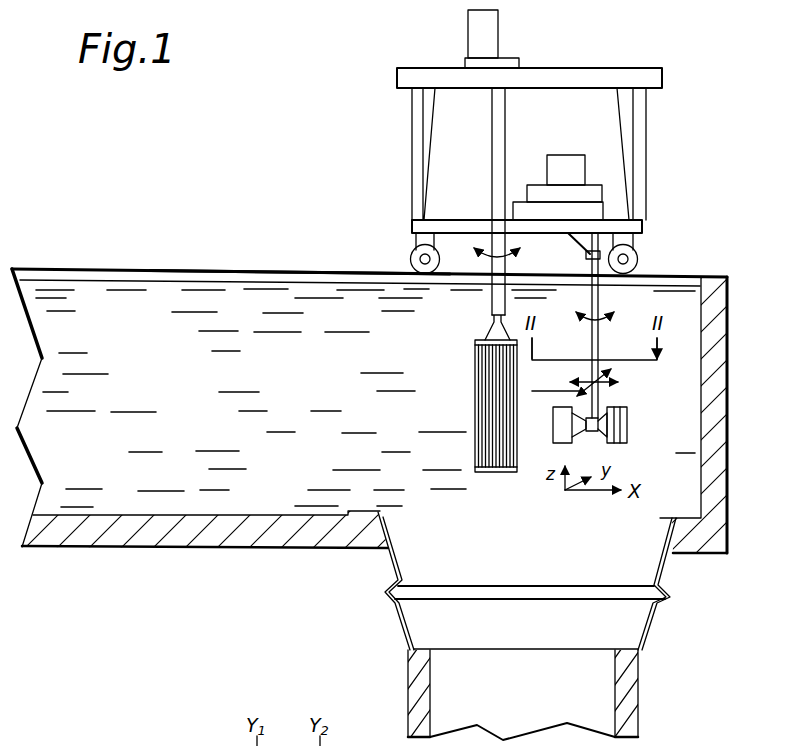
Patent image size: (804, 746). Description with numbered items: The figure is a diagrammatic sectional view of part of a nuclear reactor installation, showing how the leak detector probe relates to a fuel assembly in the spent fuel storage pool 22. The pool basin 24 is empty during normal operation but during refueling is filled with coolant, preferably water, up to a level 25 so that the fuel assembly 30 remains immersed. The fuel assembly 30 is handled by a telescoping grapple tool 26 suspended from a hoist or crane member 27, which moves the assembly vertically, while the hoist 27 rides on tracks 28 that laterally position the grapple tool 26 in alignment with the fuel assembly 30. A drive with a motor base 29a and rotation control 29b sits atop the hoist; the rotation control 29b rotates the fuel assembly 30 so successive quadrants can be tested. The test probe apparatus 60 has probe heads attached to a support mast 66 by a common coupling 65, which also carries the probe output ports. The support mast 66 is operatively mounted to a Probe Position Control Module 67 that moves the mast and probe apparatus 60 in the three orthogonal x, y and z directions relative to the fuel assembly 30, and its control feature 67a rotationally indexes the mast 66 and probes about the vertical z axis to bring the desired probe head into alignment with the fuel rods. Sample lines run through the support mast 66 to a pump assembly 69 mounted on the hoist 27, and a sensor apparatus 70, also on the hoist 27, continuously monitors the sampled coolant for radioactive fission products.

The spent fuel storage pool 22 is at (716, 292).
The pool basin 24 is at (342, 381).
The coolant level 25 is at (205, 284).
The telescoping grapple tool 26 is at (488, 330).
The hoist or crane member 27 is at (423, 98).
The tracks 28 is at (308, 271).
The motor base 29a is at (503, 62).
The rotation control 29b is at (482, 27).
The fuel assembly 30 is at (487, 435).
The test probe apparatus 60 is at (638, 427).
The common coupling 65 is at (593, 442).
The support mast 66 is at (607, 325).
The Probe Position Control Module 67 is at (607, 211).
The rotational indexing control feature 67a is at (585, 257).
The pump assembly 69 is at (543, 193).
The sensor apparatus 70 is at (580, 170).